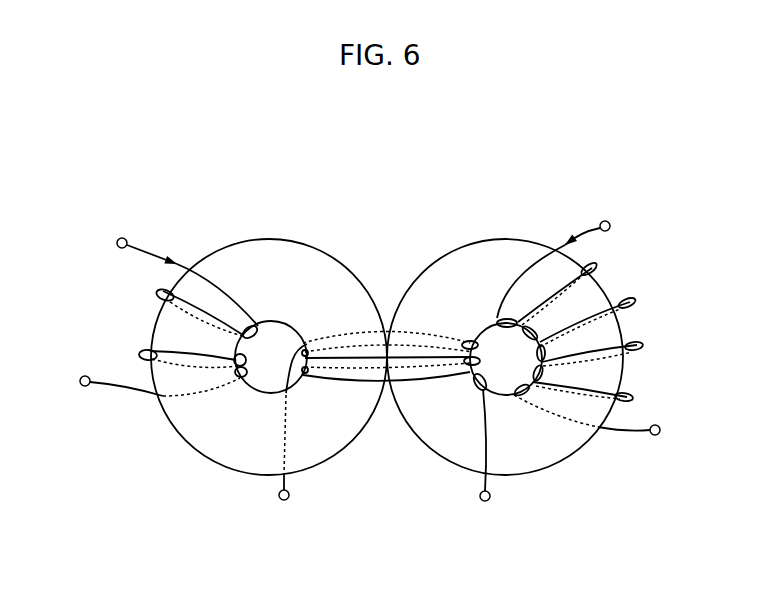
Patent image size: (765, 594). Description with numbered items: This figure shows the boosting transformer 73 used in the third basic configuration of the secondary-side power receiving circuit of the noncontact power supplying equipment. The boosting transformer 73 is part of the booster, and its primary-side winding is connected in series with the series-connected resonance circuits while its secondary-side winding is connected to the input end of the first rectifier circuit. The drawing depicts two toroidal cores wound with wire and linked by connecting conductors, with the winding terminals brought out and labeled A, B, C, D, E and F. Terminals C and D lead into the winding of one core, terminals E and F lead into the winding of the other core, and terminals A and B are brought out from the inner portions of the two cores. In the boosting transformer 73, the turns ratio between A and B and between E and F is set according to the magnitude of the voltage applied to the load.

The boosting transformer 73 is at (381, 236).
The winding terminal A is at (283, 466).
The winding terminal B is at (487, 463).
The winding terminal C is at (144, 232).
The winding terminal D is at (109, 370).
The winding terminal E is at (602, 224).
The winding terminal F is at (637, 442).